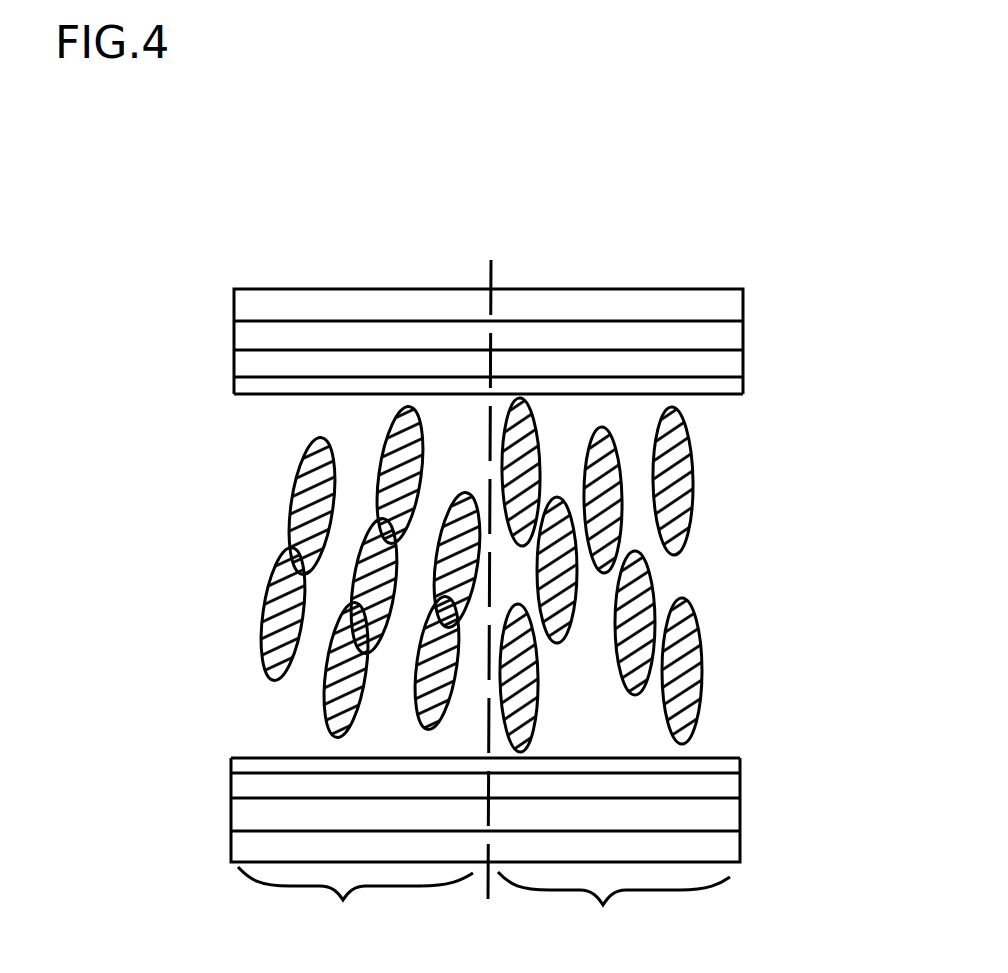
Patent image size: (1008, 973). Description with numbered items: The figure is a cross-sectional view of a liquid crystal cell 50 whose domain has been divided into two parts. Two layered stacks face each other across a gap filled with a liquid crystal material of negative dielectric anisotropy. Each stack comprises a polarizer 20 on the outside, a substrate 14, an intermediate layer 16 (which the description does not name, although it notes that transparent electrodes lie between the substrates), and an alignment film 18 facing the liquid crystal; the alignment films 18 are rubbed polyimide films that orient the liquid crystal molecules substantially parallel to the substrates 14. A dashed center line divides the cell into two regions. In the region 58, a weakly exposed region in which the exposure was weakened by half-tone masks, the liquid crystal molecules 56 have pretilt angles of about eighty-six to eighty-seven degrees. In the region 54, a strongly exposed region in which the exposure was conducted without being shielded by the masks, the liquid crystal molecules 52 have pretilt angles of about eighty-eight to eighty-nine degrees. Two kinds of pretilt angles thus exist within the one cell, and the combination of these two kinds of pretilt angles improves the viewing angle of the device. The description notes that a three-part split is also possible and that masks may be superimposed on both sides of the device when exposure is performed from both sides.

The liquid crystal display device 50 is at (628, 232).
The polarizers 20 is at (730, 305).
The substrates 14 is at (727, 340).
The alignment layer 16 is at (723, 370).
The alignment films 18 is at (730, 388).
The liquid crystal molecules (first domain) 52 is at (687, 453).
The liquid crystal molecules (second domain) 56 is at (262, 585).
The region (strongly exposed region) 54 is at (614, 914).
The region (weakly exposed region) 58 is at (355, 910).